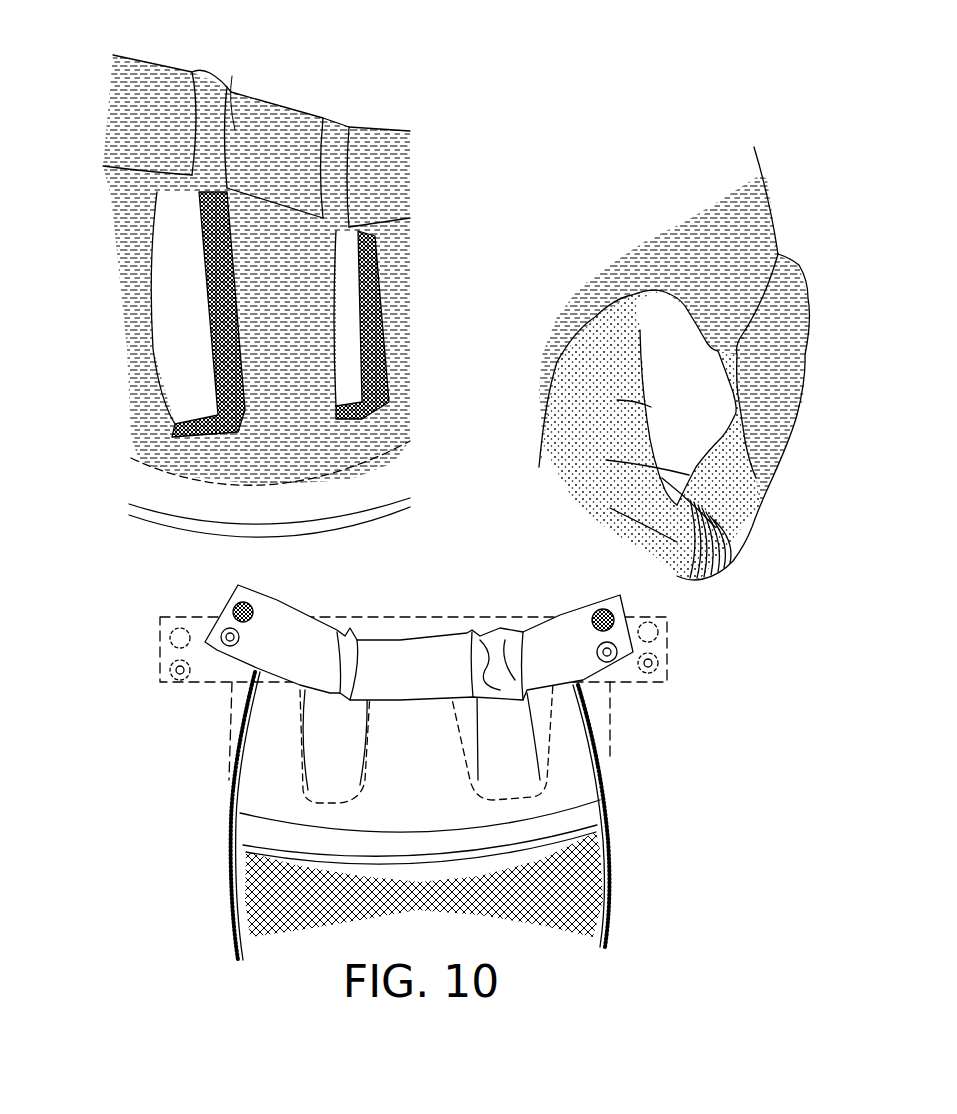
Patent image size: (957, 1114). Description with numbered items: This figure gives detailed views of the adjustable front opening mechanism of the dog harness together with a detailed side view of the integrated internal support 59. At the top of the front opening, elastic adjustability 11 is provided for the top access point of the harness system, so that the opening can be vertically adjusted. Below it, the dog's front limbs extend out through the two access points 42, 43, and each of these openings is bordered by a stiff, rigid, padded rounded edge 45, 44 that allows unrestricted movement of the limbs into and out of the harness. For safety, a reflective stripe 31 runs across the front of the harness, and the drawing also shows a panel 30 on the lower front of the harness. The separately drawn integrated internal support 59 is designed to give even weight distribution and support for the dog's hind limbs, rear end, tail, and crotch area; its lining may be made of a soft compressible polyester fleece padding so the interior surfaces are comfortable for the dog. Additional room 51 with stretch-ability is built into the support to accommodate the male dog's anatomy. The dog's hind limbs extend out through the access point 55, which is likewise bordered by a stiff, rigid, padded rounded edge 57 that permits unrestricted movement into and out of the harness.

The elastic adjustability 11 is at (232, 76).
The mesh panel 30 is at (556, 874).
The reflective stripe 31 is at (178, 488).
The access point 42 is at (193, 332).
The access point 43 is at (340, 268).
The stiff, rigid, padded rounded edge 44 is at (372, 293).
The stiff, rigid, padded rounded edge 45 is at (212, 367).
The additional room 51 is at (802, 346).
The access point 55 is at (685, 400).
The stiff, rigid, padded rounded edge 57 is at (713, 552).
The integrated internal support 59 is at (727, 221).